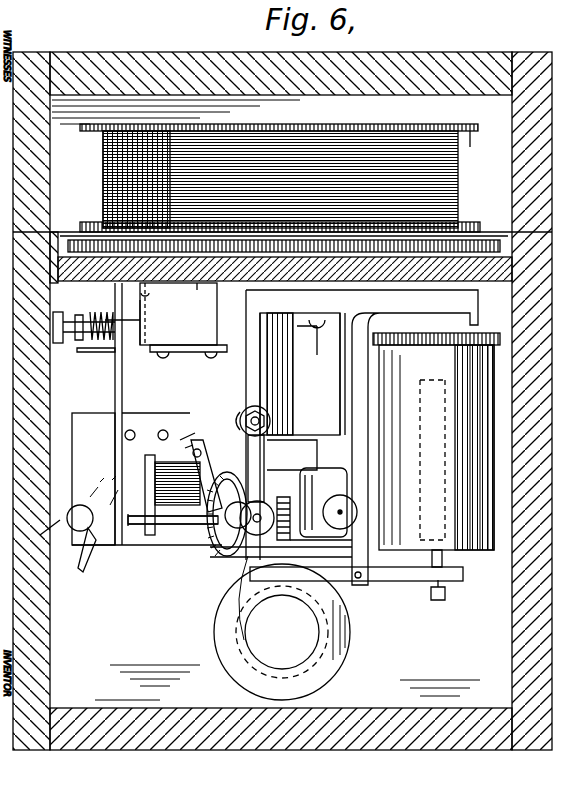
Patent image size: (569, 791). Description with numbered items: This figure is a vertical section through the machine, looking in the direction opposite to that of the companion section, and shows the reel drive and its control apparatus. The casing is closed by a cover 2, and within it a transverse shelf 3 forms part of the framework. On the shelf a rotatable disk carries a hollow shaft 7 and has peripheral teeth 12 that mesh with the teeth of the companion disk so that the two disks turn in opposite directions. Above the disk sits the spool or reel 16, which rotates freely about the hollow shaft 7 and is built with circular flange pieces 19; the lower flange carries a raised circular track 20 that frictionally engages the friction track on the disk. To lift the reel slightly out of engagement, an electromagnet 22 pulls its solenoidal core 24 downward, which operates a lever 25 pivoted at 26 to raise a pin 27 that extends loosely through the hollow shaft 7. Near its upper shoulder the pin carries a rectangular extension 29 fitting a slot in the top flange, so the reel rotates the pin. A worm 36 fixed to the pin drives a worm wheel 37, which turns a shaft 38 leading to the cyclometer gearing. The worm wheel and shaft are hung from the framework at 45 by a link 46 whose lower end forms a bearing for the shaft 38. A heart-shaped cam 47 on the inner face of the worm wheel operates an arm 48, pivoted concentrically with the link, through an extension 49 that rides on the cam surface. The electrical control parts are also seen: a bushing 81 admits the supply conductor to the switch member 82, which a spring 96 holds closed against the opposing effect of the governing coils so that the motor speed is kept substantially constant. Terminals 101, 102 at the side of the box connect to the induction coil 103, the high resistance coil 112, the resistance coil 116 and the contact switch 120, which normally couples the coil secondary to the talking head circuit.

The cover 2 is at (522, 115).
The transverse shelf 3 is at (500, 276).
The hollow shaft 7 is at (288, 372).
The teeth 12 is at (498, 238).
The spool or reel 16 is at (366, 126).
The circular flange pieces 19 is at (483, 146).
The raised circular tracks 20 is at (98, 223).
The electromagnet 22 is at (480, 553).
The solenoidal core 24 is at (458, 338).
The lever 25 is at (400, 582).
The pivot 26 is at (360, 578).
The pin 27 is at (316, 585).
The rectangular extension 29 is at (286, 126).
The worm 36 is at (302, 540).
The worm wheel 37 is at (226, 572).
The shaft 38 is at (172, 526).
The pivot on framework 45 is at (270, 418).
The link 46 is at (222, 556).
The heart-shaped cam 47 is at (262, 537).
The arm 48 is at (212, 449).
The extension 49 is at (205, 530).
The bushing 81 is at (348, 649).
The switch member 82 is at (142, 342).
The spring 96 is at (100, 345).
The terminal contact 101 is at (163, 428).
The terminal contact 102 is at (130, 428).
The induction coil 103 is at (173, 490).
The high resistance coil 112 is at (312, 488).
The resistance coil 116 is at (90, 504).
The contact switch 120 is at (199, 440).